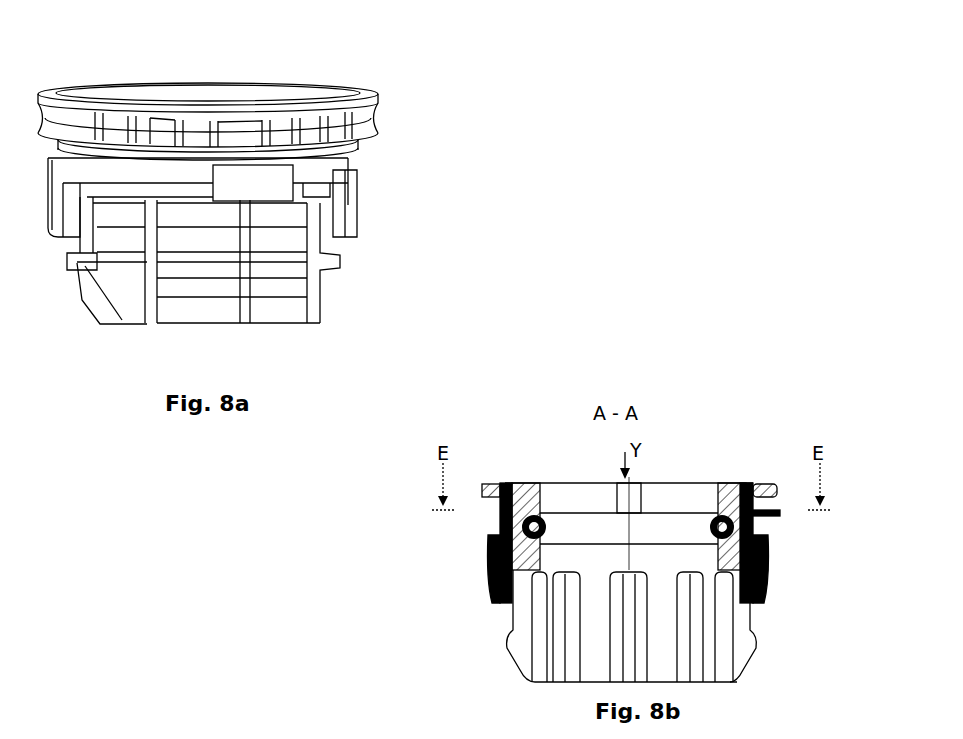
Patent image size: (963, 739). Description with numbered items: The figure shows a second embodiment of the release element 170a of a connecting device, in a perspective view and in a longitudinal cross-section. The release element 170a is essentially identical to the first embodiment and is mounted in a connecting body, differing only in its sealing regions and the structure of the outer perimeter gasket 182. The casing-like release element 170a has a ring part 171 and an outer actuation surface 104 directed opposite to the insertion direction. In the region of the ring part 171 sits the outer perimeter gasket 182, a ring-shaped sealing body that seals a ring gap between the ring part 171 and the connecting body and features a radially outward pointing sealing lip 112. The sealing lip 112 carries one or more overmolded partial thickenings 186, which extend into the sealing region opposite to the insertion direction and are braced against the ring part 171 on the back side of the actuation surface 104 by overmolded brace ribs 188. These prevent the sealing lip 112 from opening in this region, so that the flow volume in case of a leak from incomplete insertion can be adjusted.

In FIG. 8A, the release element 170a is at (434, 61).
In FIG. 8B, the release element 170a is at (706, 424).
In FIG. 8A, the outer actuation surface 104 is at (317, 85).
In FIG. 8B, the outer actuation surface 104 is at (720, 484).
In FIG. 8A, the ring part 171 is at (373, 91).
In FIG. 8B, the ring part 171 is at (535, 495).
In FIG. 8A, the brace ribs 188 is at (472, 132).
In FIG. 8A, the partial thickenings 186 is at (255, 120).
In FIG. 8A, the sealing lip 112 is at (333, 238).
In FIG. 8B, the sealing lip 112 is at (500, 515).
In FIG. 8B, the outer perimeter gasket 182 is at (762, 510).